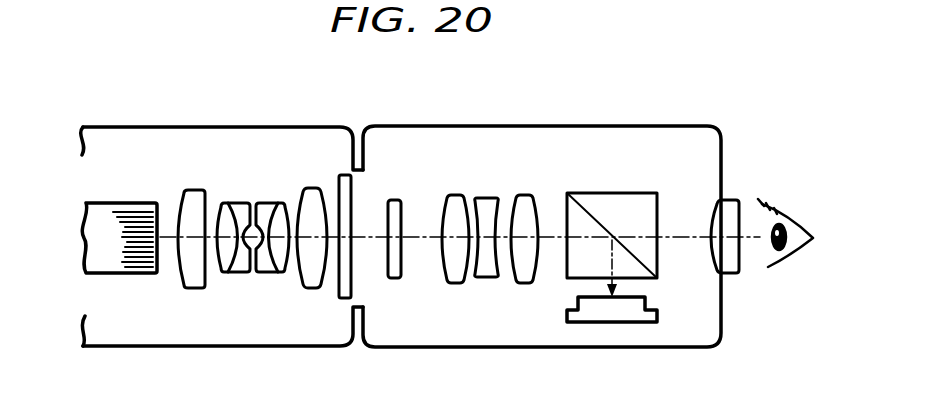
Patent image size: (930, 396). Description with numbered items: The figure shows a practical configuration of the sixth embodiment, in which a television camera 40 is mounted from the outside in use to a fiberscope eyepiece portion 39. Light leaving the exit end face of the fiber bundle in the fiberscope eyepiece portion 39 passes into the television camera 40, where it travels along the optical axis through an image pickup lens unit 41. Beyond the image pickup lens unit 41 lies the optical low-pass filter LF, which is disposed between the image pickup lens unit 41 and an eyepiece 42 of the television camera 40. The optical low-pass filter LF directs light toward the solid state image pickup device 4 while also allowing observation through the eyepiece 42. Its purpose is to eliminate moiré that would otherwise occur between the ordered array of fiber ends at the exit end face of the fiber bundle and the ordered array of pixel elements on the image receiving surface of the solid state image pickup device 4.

The fiberscope eyepiece portion 39 is at (254, 126).
The television camera 40 is at (506, 125).
The image pickup lens unit 41 is at (378, 188).
The optical low-pass filter LF is at (613, 193).
The solid state image pickup device 4 is at (630, 311).
The eyepiece 42 is at (728, 200).